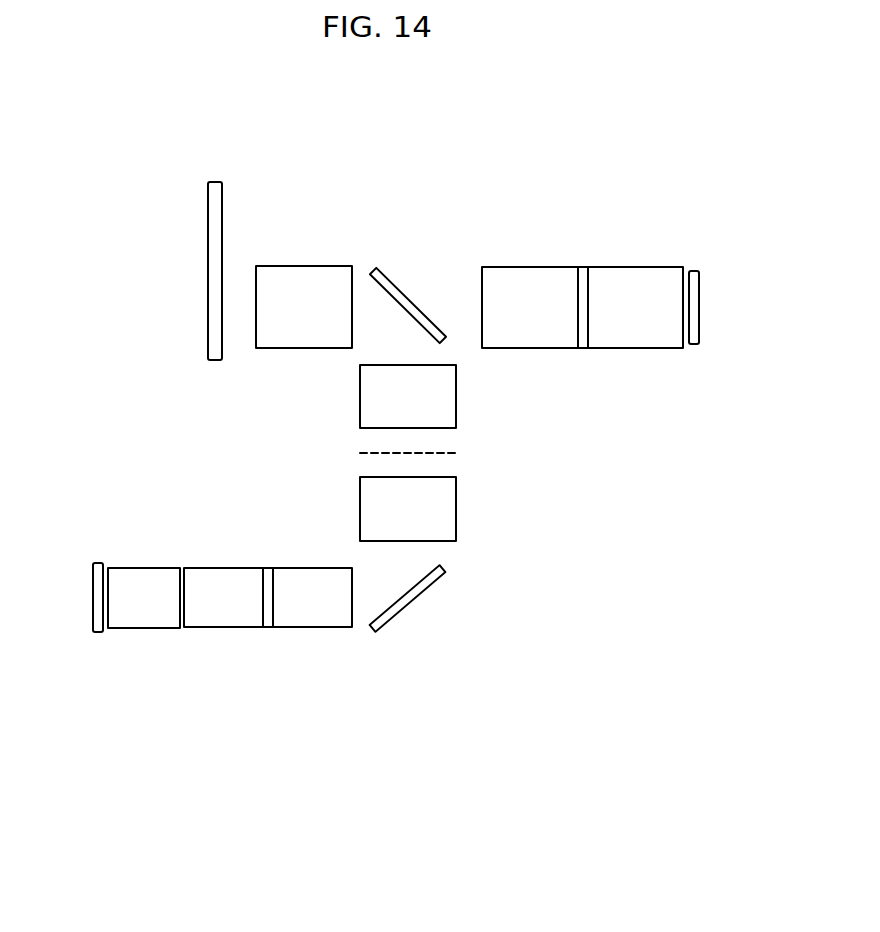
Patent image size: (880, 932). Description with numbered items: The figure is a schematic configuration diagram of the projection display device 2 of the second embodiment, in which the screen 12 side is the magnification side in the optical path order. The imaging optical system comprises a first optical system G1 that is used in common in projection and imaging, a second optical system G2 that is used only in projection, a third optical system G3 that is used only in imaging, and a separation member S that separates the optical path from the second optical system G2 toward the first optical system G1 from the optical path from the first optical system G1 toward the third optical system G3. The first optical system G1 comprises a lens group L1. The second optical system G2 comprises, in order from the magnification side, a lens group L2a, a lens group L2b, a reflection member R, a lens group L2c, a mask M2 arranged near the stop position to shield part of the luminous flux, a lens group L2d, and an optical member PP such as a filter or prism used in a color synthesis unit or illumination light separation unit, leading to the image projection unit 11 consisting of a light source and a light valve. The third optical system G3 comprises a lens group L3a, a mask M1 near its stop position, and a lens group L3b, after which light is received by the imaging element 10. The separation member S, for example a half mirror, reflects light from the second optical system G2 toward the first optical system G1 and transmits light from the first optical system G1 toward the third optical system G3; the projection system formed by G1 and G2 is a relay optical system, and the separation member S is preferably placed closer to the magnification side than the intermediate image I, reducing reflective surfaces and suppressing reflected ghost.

The projection display device 2 is at (428, 147).
The screen 12 is at (208, 307).
The first optical system G1 is at (330, 192).
The lens group L1 is at (303, 266).
The separation member S is at (405, 293).
The third optical system G3 is at (672, 191).
The lens group L3a is at (517, 267).
The mask (first light shielding member) M1 is at (585, 267).
The lens group L3b is at (651, 267).
The imaging element 10 is at (703, 325).
The intermediate image I is at (358, 453).
The lens group L2a is at (457, 408).
The lens group L2b is at (457, 503).
The reflection member R is at (422, 593).
The lens group L2c is at (313, 628).
The mask (second light shielding member) M2 is at (268, 628).
The lens group L2d is at (225, 628).
The optical member PP is at (145, 628).
The second optical system G2 is at (558, 434).
The image projection unit 11 is at (93, 611).